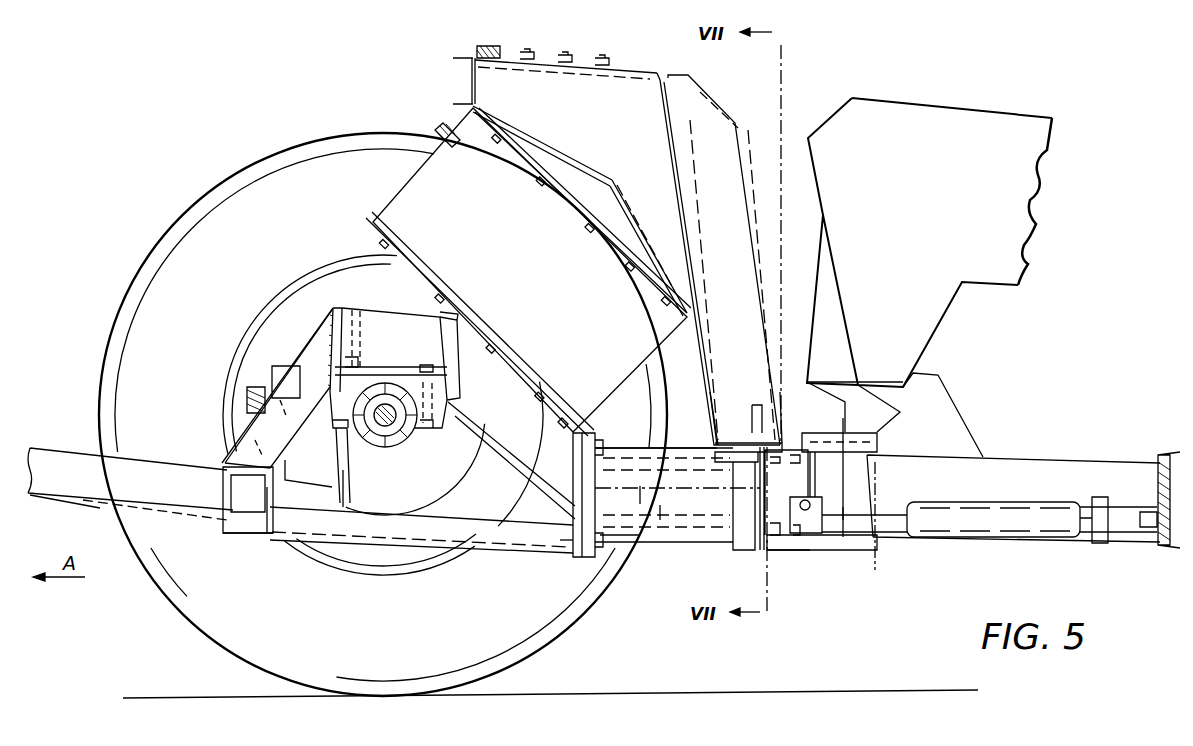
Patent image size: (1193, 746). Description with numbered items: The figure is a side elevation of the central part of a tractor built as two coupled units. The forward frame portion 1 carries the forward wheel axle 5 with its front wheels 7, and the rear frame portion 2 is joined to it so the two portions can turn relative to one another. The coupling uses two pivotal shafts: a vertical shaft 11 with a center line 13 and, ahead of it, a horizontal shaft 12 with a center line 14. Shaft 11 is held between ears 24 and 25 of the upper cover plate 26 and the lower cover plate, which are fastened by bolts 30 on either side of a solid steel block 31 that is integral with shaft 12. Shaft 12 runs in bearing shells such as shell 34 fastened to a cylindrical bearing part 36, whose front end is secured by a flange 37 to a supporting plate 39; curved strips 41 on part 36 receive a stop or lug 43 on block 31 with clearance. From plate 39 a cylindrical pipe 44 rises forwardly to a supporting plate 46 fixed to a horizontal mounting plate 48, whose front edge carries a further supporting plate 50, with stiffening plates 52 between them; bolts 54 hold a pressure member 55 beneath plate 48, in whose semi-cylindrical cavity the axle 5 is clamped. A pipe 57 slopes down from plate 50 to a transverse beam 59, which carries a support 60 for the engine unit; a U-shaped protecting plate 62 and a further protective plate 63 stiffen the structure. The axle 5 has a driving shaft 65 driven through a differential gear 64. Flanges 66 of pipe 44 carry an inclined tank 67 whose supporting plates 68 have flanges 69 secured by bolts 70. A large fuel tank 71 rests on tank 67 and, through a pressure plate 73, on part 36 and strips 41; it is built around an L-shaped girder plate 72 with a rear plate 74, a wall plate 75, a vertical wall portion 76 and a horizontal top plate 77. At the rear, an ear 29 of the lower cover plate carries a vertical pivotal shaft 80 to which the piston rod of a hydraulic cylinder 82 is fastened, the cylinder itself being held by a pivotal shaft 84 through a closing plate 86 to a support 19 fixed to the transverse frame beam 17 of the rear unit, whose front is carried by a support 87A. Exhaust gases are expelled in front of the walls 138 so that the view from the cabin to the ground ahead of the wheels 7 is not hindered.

The forward frame portion 1 is at (97, 507).
The rear frame portion 2 is at (1038, 212).
The forward wheel axle 5 is at (406, 440).
The front wheels 7 is at (236, 186).
The vertical shaft 11 is at (878, 481).
The horizontal shaft 12 is at (669, 544).
The center line 13 is at (850, 420).
The center line 14 is at (704, 502).
The frame beam 17 is at (1165, 452).
The support 19 is at (1055, 456).
The ear 24 is at (880, 440).
The ear 25 is at (862, 552).
The upper cover plate 26 is at (794, 432).
The ear 29 is at (786, 553).
The bolts 30 is at (777, 458).
The solid steel block 31 is at (772, 575).
The bearing shell 34 is at (618, 546).
The cylindrical supporting pipe 36 is at (683, 445).
The flange 37 is at (601, 441).
The supporting plate 39 is at (563, 549).
The curved strip 41 is at (733, 475).
The stop or lug 43 is at (751, 551).
The cylindrical pipe 44 is at (473, 412).
The supporting plate 46 is at (454, 312).
The mounting plate 48 is at (390, 367).
The supporting plate 50 is at (343, 310).
The stiffening plates 52 is at (395, 316).
The bolts 54 is at (428, 364).
The pressure member 55 is at (300, 428).
The pipe 57 is at (310, 348).
The transverse beam 59 is at (222, 488).
The support 60 is at (142, 456).
The U-shaped protecting plate 62 is at (218, 527).
The protective plate 63 is at (500, 536).
The differential gear 64 is at (455, 478).
The driving shaft 65 is at (397, 441).
The flanges 66 is at (540, 390).
The tank 67 is at (405, 187).
The supporting plates 68 is at (618, 207).
The flanges 69 is at (497, 136).
The bolts 70 is at (508, 154).
The fuel tank 71 is at (627, 63).
The supporting plate 72 is at (705, 254).
The pressure plate 73 is at (742, 430).
The plate 74 is at (738, 189).
The wall plate 75 is at (598, 160).
The vertical wall portion 76 is at (488, 83).
The top plate 77 is at (572, 76).
The vertical pivotal shaft 80 is at (812, 497).
The hydraulic cylinder 82 is at (965, 538).
The pivotal shaft 84 is at (1100, 545).
The closing plate 86 is at (1148, 508).
The support 87A is at (943, 393).
The walls 138 is at (925, 113).